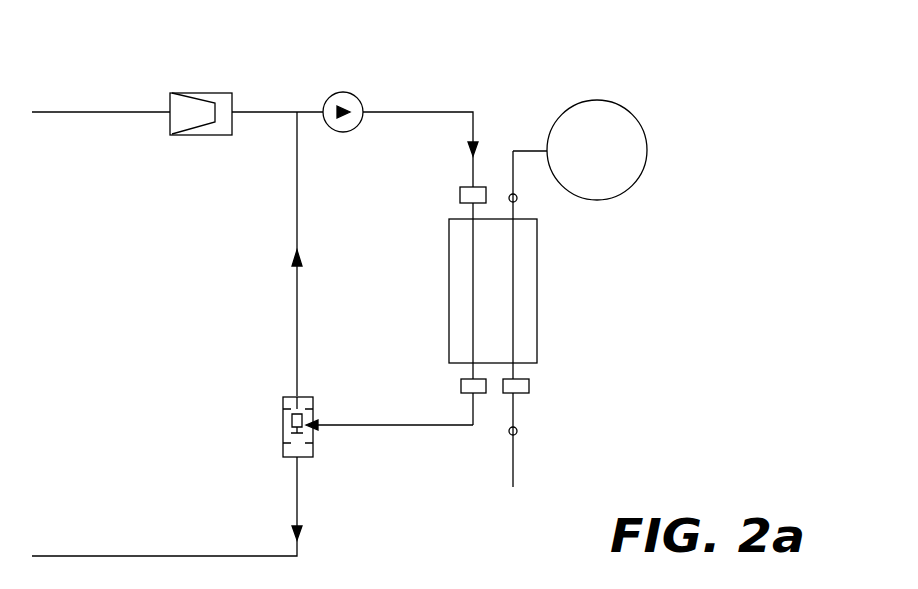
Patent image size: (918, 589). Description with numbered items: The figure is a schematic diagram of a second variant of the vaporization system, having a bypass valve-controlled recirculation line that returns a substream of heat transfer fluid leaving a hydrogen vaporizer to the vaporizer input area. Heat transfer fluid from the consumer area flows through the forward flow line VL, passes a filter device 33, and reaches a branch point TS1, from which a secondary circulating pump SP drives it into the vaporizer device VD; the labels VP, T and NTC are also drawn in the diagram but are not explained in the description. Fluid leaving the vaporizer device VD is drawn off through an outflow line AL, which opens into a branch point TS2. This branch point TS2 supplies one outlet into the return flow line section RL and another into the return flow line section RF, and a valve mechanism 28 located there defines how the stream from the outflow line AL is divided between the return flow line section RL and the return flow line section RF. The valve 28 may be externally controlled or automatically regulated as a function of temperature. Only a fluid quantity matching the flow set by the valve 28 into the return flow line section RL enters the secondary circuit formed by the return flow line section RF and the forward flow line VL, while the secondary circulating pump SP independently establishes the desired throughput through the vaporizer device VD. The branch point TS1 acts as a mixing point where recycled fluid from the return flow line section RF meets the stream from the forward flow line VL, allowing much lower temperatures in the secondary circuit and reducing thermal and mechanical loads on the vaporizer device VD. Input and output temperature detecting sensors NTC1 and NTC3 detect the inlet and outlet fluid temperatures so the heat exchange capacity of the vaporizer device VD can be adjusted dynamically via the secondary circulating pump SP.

The forward flow line VL is at (120, 112).
The filter device 33 is at (171, 132).
The secondary circulating pump SP is at (360, 97).
The branch point TS1 is at (292, 86).
The return flow line section RF is at (297, 338).
The valve mechanism 28 is at (312, 404).
The branch point TS2 is at (258, 442).
The return flow line section RL is at (120, 556).
The outflow line AL is at (348, 425).
The input temperature detecting sensor NTC1 is at (464, 187).
The output temperature detecting sensor NTC3 is at (466, 393).
The vaporizer device VD is at (562, 290).
The evaporator VP is at (436, 276).
The tank T is at (578, 239).
The temperature sensor NTC is at (522, 386).